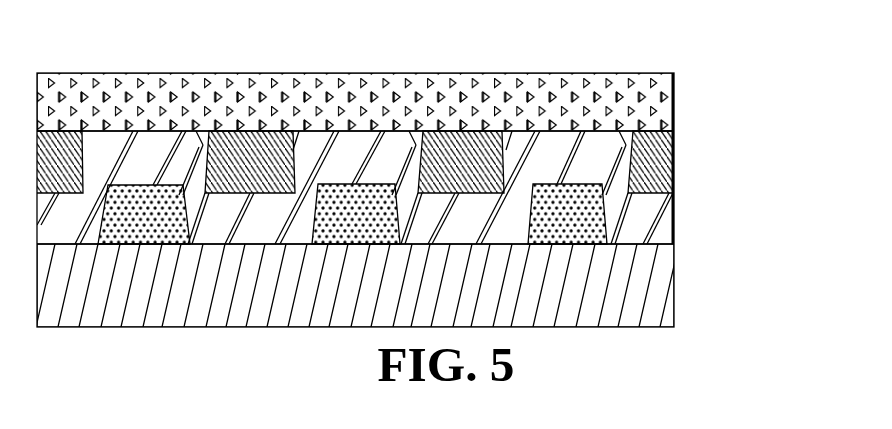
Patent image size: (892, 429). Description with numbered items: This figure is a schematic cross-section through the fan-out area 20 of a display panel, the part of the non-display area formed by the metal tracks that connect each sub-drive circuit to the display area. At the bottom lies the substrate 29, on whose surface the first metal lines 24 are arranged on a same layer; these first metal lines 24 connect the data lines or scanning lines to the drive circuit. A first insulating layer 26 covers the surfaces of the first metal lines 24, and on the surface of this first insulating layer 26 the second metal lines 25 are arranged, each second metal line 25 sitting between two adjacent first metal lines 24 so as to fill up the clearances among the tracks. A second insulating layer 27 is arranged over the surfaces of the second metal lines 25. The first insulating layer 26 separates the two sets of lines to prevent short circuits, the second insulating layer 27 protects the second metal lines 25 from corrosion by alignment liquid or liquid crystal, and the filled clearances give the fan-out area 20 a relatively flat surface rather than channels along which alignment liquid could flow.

The fan-out area 20 is at (765, 86).
The first metal lines 24 is at (623, 240).
The second metal lines 25 is at (655, 170).
The first insulating layer 26 is at (650, 212).
The second insulating layer 27 is at (674, 100).
The substrate 29 is at (663, 303).